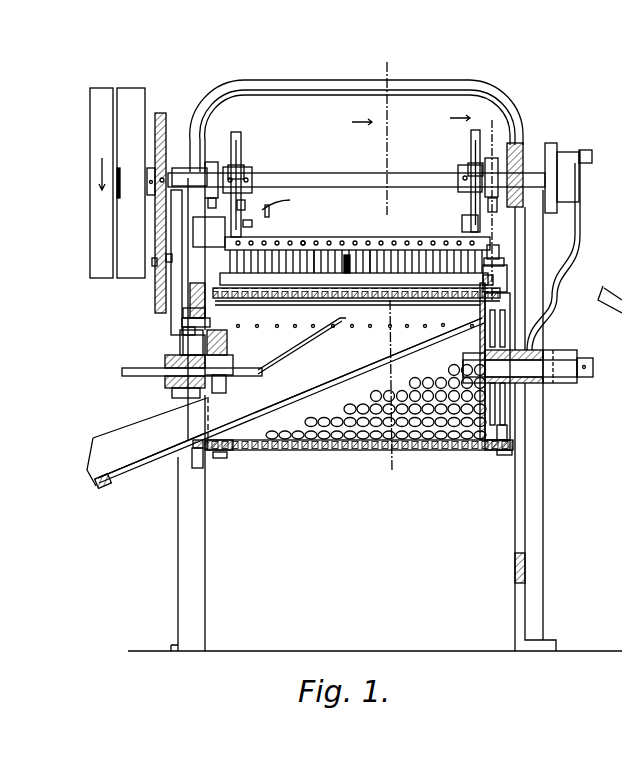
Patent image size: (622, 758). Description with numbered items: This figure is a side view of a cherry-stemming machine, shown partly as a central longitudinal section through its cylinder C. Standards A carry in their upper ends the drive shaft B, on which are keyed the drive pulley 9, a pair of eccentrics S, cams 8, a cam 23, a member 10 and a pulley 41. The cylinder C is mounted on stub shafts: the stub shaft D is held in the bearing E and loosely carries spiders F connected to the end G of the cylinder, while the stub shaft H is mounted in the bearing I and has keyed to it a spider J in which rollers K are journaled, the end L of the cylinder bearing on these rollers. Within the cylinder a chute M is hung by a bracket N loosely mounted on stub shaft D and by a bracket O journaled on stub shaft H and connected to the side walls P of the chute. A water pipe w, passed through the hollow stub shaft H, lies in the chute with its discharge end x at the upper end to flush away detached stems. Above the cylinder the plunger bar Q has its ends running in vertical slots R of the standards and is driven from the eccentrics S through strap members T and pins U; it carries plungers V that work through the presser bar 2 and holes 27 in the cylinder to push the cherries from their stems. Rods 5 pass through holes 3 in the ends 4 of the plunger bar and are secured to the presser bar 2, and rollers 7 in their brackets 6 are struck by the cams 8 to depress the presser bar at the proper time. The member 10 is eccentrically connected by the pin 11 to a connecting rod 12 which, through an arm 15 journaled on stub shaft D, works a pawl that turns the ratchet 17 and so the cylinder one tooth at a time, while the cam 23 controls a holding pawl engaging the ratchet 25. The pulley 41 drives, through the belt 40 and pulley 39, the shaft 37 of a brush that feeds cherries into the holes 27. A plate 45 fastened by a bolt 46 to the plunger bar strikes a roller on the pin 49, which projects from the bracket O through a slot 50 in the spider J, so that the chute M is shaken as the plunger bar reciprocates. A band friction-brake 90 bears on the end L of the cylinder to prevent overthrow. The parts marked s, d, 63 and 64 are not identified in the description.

The standards A is at (190, 515).
The drive shaft B is at (308, 183).
The eccentrics S is at (243, 155).
The rod s is at (495, 246).
The strap members T is at (462, 210).
The pins U is at (256, 223).
The plunger bar Q is at (302, 243).
The plungers V is at (314, 268).
The vertical slots R is at (172, 260).
The bearing E is at (530, 350).
The bracket N is at (480, 355).
The stub shaft D is at (510, 405).
The spiders F is at (505, 400).
The end of the cylinder G is at (505, 432).
The chute M is at (290, 398).
The water pipe w is at (316, 334).
The inclined bottom plate d is at (395, 322).
The discharge end x is at (436, 325).
The cylinder C is at (325, 453).
The stub shaft H is at (170, 357).
The bracket O is at (230, 342).
The spider J is at (240, 380).
The bearing I is at (190, 400).
The side walls of the chute P is at (138, 423).
The end of the cylinder L is at (200, 455).
The rollers K is at (140, 322).
The presser bar 2 is at (362, 330).
The holes 3 is at (546, 262).
The ends of the plunger bar 4 is at (209, 232).
The rods 5 is at (218, 272).
The brackets 6 is at (535, 108).
The rollers 7 is at (245, 205).
The cams 8 is at (210, 162).
The drive pulley 9 is at (117, 183).
The member 10 is at (565, 165).
The pin 11 is at (591, 155).
The connecting rod 12 is at (580, 190).
The arm 15 is at (570, 370).
The ratchet 17 is at (500, 456).
The cam 23 is at (550, 150).
The ratchet 25 is at (495, 280).
The holes 27 is at (398, 245).
The shaft 37 is at (180, 312).
The pulley 39 is at (155, 262).
The belt 40 is at (165, 258).
The pulley 41 is at (162, 113).
The plate 45 is at (182, 322).
The bolt 46 is at (182, 240).
The pin 49 is at (180, 332).
The slot 50 is at (232, 318).
The needle 63 is at (347, 268).
The needle 64 is at (370, 270).
The band friction-brake 90 is at (222, 460).